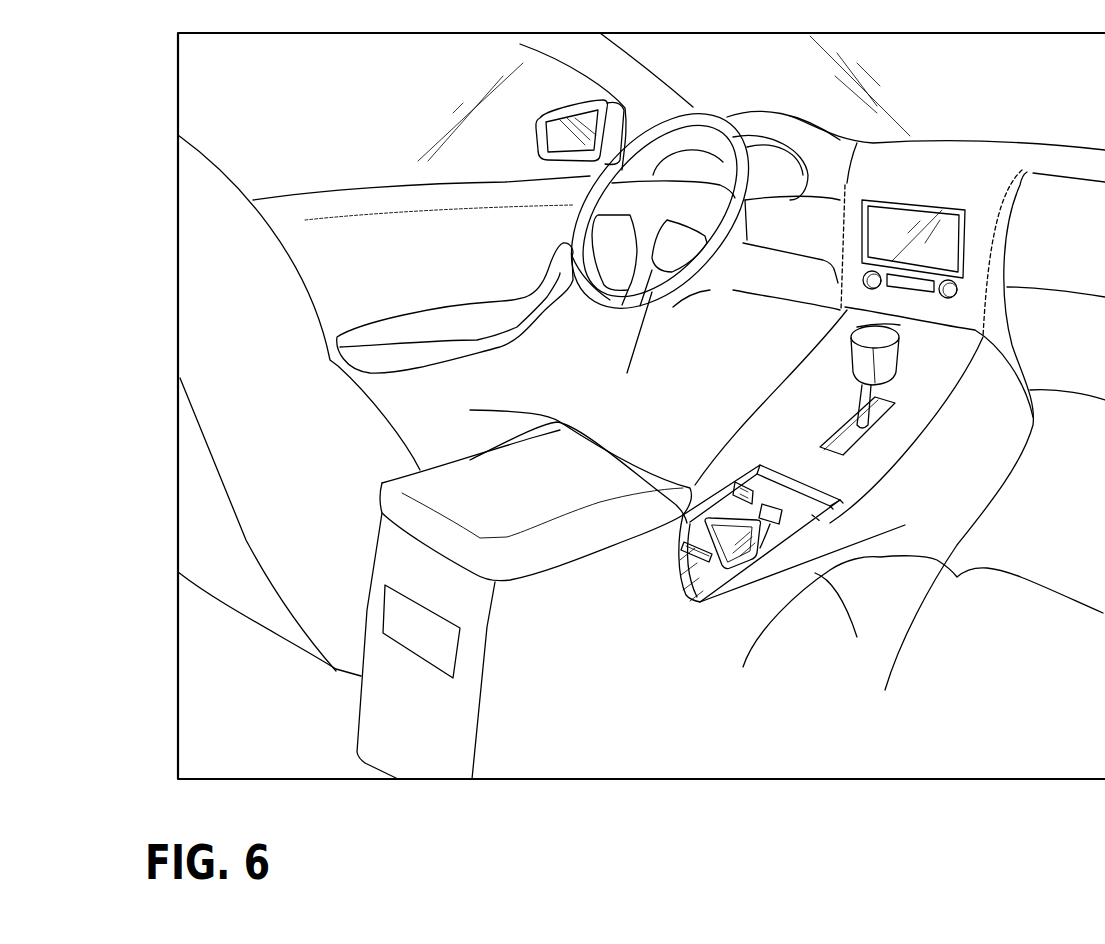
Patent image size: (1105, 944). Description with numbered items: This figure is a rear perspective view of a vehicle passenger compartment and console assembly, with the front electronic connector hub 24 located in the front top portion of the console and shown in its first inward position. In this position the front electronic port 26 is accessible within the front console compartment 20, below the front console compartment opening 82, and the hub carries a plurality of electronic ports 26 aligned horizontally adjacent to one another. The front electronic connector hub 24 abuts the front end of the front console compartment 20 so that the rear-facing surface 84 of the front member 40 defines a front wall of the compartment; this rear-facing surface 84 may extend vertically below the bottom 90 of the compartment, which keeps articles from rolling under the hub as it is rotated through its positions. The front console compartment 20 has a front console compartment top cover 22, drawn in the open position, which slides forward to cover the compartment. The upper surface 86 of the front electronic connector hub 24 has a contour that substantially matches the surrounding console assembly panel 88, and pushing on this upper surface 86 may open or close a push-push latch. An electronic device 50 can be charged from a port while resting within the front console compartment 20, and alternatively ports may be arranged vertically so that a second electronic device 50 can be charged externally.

The front console compartment 20 is at (662, 453).
The front console compartment top cover 22 is at (712, 577).
The front electronic connector hub 24 is at (773, 465).
The front electronic port 26 is at (727, 484).
The front member 40 is at (820, 520).
The electronic device 50 is at (765, 557).
The front console compartment opening 82 is at (721, 513).
The rear-facing surface 84 is at (798, 522).
The upper surface 86 is at (830, 498).
The console assembly panel 88 is at (820, 475).
The bottom 90 is at (563, 421).